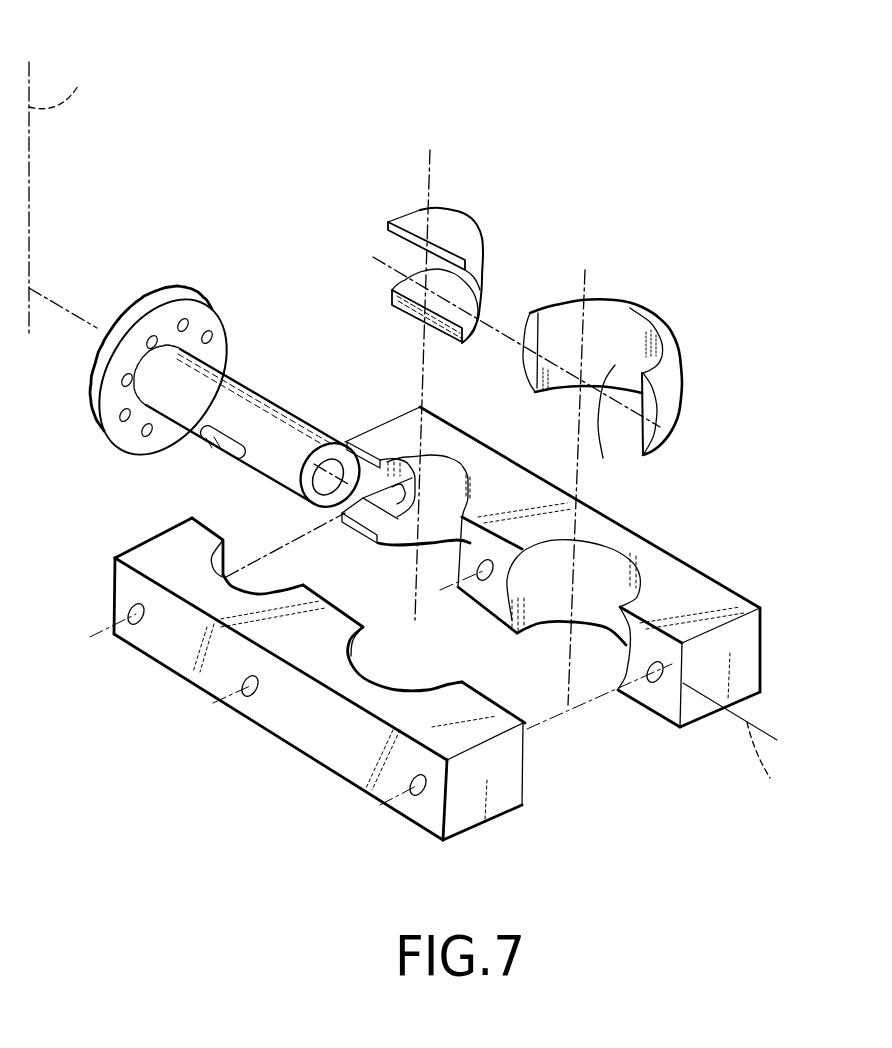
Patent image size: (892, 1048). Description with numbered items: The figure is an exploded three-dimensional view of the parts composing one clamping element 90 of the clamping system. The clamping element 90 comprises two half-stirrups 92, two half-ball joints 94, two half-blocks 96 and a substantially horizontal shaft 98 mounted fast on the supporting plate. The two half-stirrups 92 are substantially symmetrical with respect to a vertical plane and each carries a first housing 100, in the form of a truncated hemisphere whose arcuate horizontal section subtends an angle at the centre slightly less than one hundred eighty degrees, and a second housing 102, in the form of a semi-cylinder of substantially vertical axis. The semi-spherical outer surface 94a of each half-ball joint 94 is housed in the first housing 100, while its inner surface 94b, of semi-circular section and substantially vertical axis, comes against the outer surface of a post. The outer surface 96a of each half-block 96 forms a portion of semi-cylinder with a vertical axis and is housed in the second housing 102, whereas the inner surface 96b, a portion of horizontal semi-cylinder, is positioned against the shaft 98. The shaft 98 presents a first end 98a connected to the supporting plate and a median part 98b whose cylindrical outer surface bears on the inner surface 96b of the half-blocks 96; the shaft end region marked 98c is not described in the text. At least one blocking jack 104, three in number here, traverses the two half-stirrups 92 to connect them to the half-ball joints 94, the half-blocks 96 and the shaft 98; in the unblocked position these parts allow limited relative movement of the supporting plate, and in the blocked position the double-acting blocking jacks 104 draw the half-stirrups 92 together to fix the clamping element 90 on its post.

The clamping element 90 is at (249, 153).
The half-stirrup 92 is at (503, 795).
The half-ball joint 94 is at (683, 323).
The semi-spherical outer surface 94a is at (691, 393).
The inner surface 94b is at (600, 452).
The half-block 96 is at (456, 193).
The outer surface 96a is at (481, 223).
The inner surface 96b is at (464, 287).
The horizontal shaft 98 is at (252, 321).
The first end 98a is at (180, 292).
The median part 98b is at (274, 386).
The bearing plate 98c is at (340, 430).
The first housing 100 is at (558, 634).
The second housing 102 is at (406, 554).
The blocking jack 104 is at (232, 700).